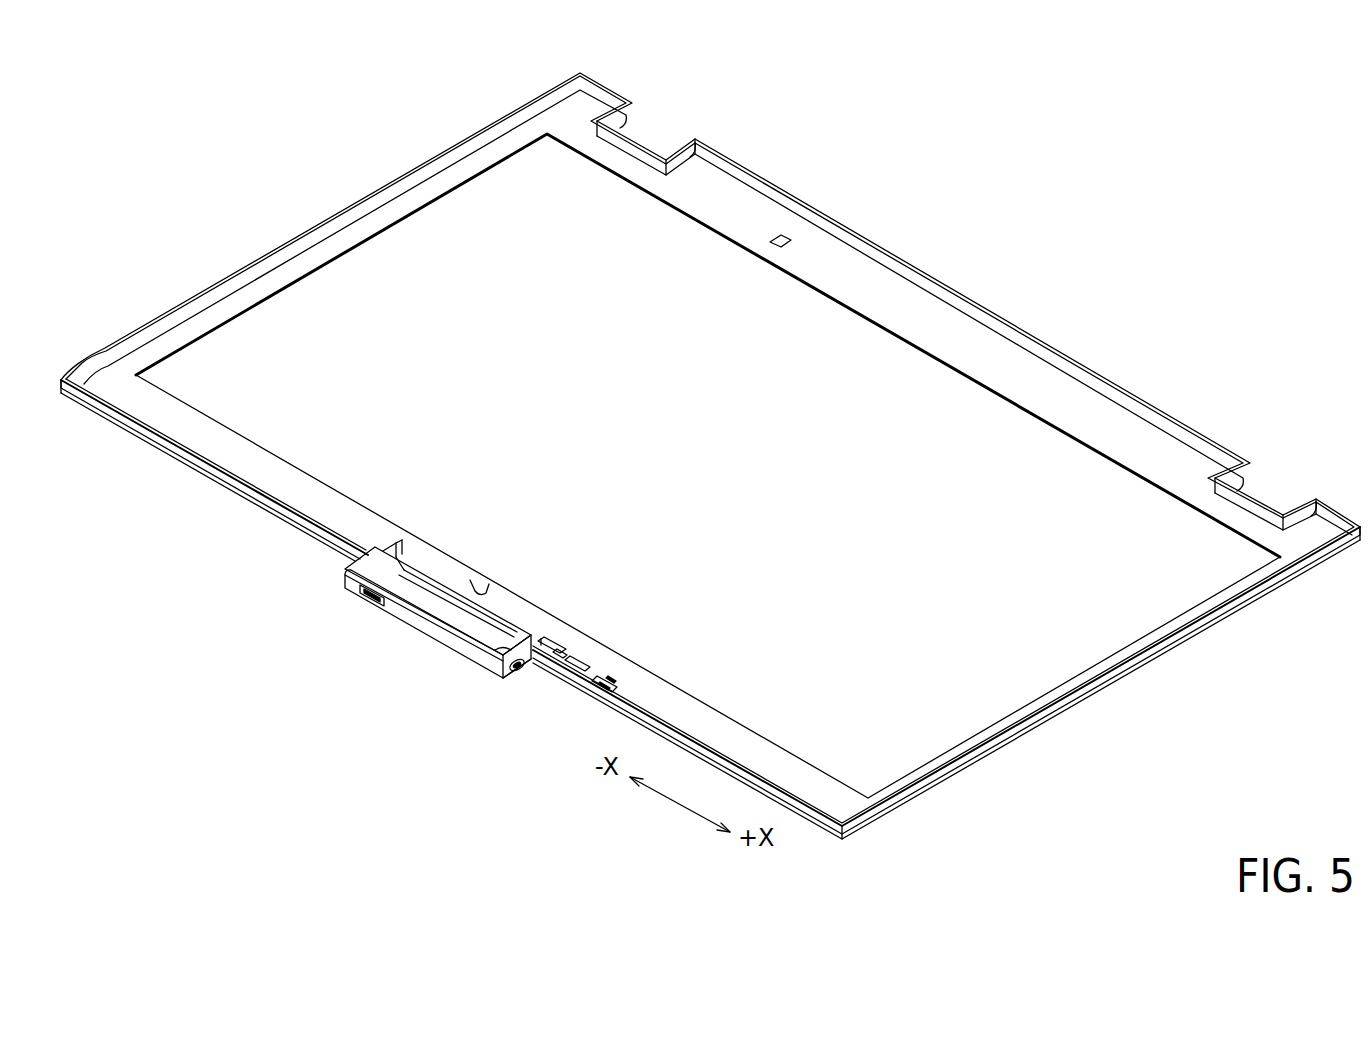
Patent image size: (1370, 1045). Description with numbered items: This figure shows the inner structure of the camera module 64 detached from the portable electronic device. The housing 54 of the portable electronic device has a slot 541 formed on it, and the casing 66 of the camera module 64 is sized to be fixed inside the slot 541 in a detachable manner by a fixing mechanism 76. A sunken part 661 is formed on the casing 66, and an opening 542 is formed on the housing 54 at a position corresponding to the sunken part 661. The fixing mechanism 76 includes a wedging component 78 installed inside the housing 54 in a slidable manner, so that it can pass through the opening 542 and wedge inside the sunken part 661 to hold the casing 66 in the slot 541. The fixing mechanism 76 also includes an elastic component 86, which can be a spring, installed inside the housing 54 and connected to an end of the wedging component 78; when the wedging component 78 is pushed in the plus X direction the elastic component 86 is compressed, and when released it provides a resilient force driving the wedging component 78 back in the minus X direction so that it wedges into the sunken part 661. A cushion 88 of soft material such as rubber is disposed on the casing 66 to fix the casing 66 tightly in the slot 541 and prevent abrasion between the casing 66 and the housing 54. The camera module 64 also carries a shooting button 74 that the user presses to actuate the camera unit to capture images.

The housing 54 is at (122, 348).
The slot 541 is at (410, 553).
The opening 542 is at (544, 650).
The camera module 64 is at (417, 625).
The casing 66 is at (442, 638).
The sunken part 661 is at (521, 682).
The shooting button 74 is at (373, 600).
The fixing mechanism 76 is at (583, 673).
The wedging component 78 is at (561, 657).
The elastic component 86 is at (603, 681).
The cushion 88 is at (506, 670).